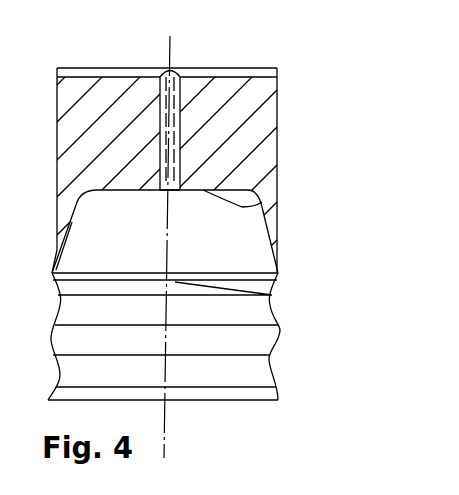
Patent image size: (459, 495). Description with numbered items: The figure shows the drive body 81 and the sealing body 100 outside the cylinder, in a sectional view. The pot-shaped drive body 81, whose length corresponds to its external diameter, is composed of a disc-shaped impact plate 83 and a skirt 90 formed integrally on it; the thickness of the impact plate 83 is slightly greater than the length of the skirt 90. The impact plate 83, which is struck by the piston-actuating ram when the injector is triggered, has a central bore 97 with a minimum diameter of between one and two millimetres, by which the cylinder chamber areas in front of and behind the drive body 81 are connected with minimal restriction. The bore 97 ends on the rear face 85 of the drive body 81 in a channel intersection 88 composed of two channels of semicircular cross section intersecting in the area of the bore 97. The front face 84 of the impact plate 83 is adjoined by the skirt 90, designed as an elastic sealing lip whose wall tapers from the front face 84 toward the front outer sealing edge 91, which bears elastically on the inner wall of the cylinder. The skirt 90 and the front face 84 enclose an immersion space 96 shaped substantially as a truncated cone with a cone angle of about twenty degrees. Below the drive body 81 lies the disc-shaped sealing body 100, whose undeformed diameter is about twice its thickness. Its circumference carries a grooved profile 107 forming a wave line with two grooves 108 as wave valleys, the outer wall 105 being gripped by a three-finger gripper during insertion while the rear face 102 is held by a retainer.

The drive body 81 is at (290, 130).
The rear face 85 is at (275, 67).
The channel intersection 88 is at (283, 72).
The impact plate 83 is at (272, 108).
The bore 97 is at (272, 160).
The immersion space 96 is at (226, 248).
The front face 84 is at (264, 199).
The skirt 90 is at (272, 222).
The front outer sealing edge 91 is at (278, 274).
The rear face 102 is at (282, 295).
The outer wall 105 is at (280, 325).
The grooved profile 107 is at (275, 355).
The grooves 108 is at (275, 375).
The sealing body 100 is at (292, 402).